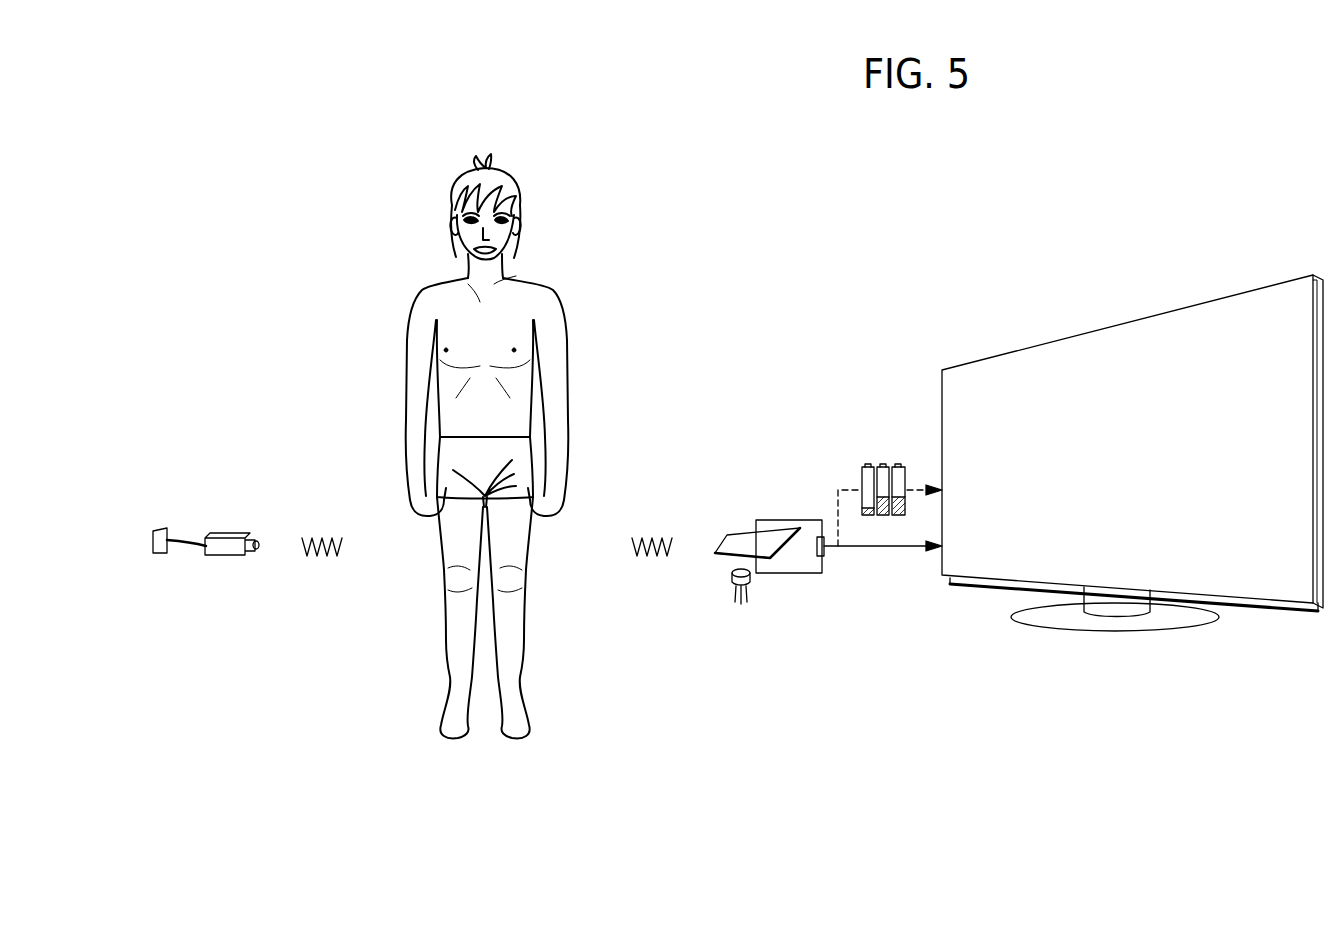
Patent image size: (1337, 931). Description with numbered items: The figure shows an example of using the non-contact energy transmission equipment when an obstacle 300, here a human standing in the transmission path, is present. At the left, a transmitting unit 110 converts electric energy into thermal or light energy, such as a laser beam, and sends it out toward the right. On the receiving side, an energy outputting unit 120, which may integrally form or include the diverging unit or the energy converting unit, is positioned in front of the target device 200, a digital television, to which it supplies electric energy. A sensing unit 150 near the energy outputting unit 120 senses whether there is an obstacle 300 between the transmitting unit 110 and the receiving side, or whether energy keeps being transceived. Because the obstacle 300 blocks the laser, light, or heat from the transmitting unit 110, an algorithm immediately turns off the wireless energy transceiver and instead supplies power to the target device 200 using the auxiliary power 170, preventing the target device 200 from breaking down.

The transmitting unit 110 is at (229, 556).
The energy outputting unit 120 is at (741, 536).
The sensing unit 150 is at (730, 582).
The auxiliary power 170 is at (882, 470).
The target device 200 is at (1117, 335).
The obstacle 300 is at (546, 292).